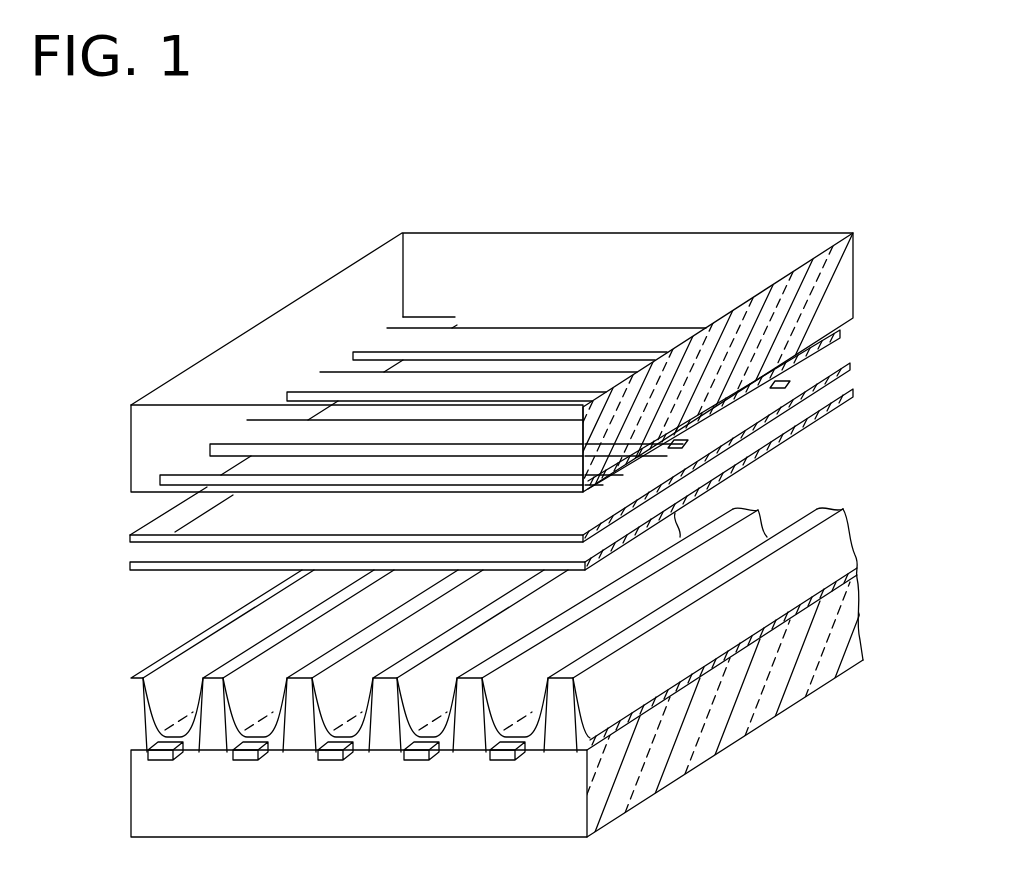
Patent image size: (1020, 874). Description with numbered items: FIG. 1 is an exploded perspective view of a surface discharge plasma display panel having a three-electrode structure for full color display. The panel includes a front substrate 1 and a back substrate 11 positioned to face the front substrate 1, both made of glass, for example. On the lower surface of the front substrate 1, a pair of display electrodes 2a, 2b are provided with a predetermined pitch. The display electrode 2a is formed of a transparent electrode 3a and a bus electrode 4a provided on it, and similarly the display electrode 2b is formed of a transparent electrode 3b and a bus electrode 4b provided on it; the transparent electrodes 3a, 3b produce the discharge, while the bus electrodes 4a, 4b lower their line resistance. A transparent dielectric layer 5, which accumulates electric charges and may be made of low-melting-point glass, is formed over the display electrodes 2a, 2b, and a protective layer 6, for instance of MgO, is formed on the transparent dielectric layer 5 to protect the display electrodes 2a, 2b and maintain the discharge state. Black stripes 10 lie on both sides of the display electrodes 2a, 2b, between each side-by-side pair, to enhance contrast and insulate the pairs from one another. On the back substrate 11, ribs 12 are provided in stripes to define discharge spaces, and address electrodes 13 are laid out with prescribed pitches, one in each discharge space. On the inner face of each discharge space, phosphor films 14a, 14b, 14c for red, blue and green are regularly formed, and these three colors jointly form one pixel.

The front substrate 1 is at (855, 278).
The black stripes 10 is at (843, 337).
The display electrode 2a is at (702, 446).
The display electrode 2b is at (792, 384).
The transparent electrode 3a is at (720, 440).
The transparent electrode 3b is at (752, 398).
The bus electrode 4a is at (706, 468).
The bus electrode 4b is at (795, 400).
The transparent dielectric layer 5 is at (853, 370).
The protective layer 6 is at (855, 393).
The back substrate 11 is at (793, 690).
The ribs 12 is at (567, 697).
The address electrodes 13 is at (511, 758).
The phosphor film 14a is at (188, 758).
The phosphor film 14b is at (276, 758).
The phosphor film 14c is at (364, 758).